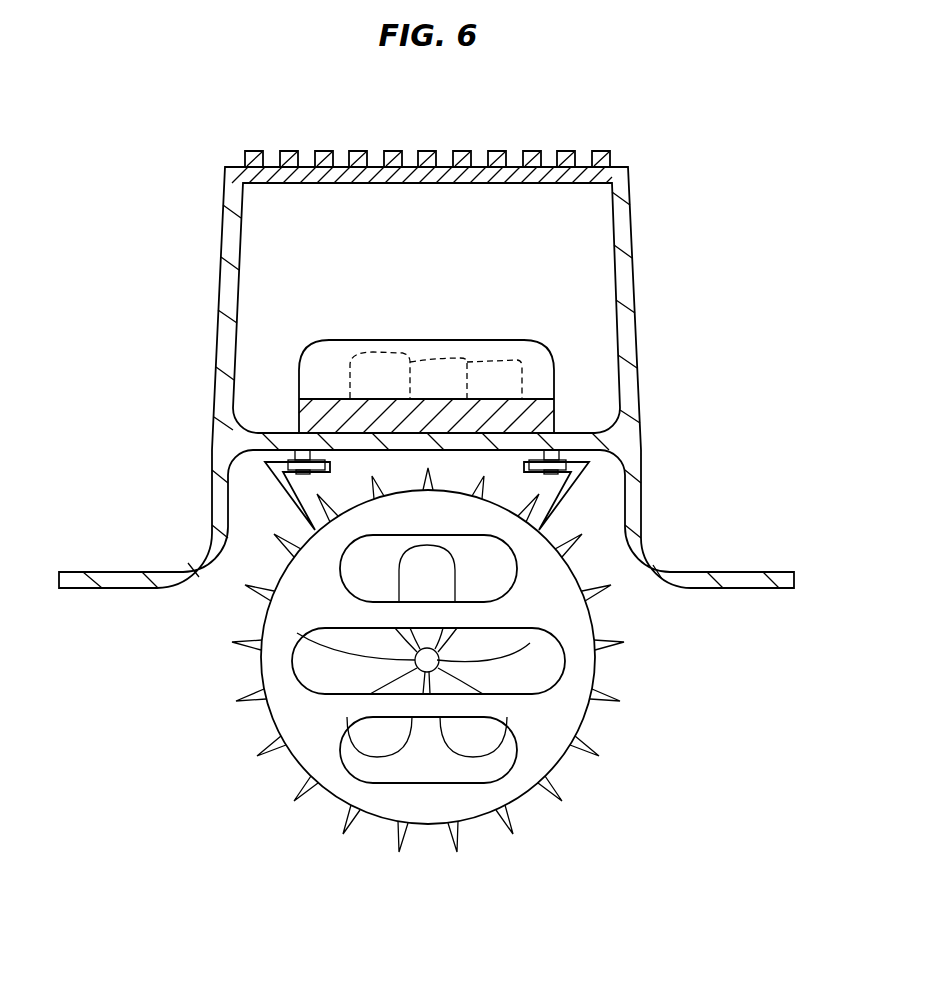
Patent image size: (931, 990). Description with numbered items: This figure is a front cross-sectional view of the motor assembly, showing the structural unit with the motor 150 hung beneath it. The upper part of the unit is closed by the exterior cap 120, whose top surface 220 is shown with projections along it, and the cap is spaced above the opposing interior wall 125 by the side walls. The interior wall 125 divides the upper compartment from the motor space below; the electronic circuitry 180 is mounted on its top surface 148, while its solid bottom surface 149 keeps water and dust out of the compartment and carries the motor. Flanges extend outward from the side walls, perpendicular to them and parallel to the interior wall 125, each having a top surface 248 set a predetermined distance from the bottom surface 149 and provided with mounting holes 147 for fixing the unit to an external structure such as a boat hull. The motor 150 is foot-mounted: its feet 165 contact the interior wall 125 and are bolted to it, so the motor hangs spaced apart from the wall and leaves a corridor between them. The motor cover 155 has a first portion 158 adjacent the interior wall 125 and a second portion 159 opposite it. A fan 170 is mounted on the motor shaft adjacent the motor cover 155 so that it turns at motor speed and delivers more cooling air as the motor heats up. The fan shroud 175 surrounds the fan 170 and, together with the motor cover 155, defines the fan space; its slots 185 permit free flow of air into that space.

The exterior cap 120 is at (452, 168).
The top surface of the exterior cap 220 is at (570, 155).
The electronic circuitry 180 is at (482, 328).
The top surface of the interior wall 148 is at (265, 432).
The interior wall 125 is at (567, 440).
The bottom surface of the interior wall 149 is at (250, 450).
The feet 165 is at (578, 497).
The mounting holes 147 is at (137, 580).
The top surface of the flanges 248 is at (95, 572).
The first portion of the motor cover 158 is at (448, 490).
The slots 185 is at (310, 670).
The fan shroud 175 is at (583, 685).
The motor cover 155 is at (605, 707).
The fan 170 is at (417, 663).
The motor 150 is at (525, 797).
The second portion of the motor cover 159 is at (421, 826).